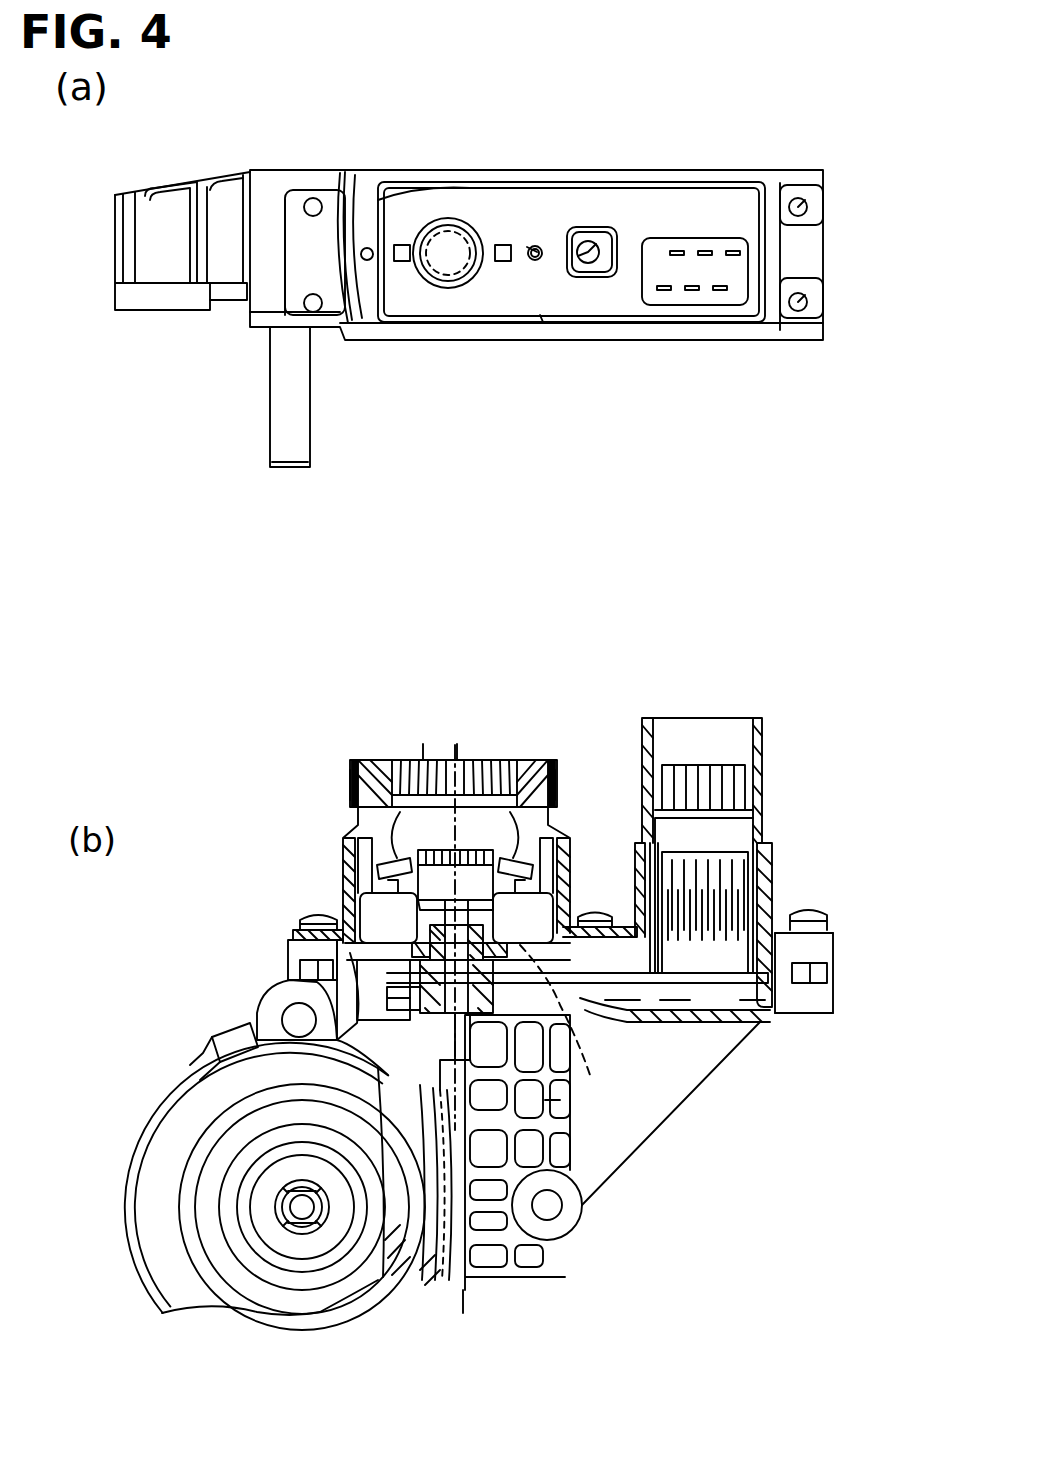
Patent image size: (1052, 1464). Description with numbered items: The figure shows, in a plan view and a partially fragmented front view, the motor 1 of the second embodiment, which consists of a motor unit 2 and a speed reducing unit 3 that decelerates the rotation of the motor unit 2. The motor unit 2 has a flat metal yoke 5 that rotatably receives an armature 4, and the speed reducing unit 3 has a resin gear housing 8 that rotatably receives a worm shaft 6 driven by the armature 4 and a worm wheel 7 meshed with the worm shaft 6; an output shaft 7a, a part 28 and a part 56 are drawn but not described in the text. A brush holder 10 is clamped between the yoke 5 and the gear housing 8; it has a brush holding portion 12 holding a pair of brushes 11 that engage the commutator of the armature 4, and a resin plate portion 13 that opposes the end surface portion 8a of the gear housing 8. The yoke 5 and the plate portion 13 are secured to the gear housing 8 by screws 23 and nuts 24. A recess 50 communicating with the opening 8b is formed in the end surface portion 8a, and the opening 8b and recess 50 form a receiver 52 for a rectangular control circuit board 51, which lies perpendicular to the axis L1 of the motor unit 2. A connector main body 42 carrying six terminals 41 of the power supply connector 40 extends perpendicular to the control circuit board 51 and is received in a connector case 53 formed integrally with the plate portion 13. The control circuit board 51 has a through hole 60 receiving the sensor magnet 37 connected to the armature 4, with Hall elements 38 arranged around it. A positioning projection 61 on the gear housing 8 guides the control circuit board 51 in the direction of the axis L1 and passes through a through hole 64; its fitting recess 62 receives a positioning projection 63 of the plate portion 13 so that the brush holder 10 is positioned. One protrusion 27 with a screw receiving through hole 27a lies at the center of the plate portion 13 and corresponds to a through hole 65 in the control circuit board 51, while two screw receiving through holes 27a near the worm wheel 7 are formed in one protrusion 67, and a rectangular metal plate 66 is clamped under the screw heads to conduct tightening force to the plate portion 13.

In FIG. 4b, the motor 1 is at (223, 848).
In FIG. 4b, the motor unit 2 is at (348, 780).
In FIG. 4a, the speed reducing unit 3 is at (160, 320).
In FIG. 4b, the speed reducing unit 3 is at (634, 1170).
In FIG. 4b, the armature 4 is at (456, 829).
In FIG. 4b, the yoke 5 is at (560, 800).
In FIG. 4b, the worm shaft 6 is at (398, 1115).
In FIG. 4b, the worm wheel 7 is at (394, 1263).
In FIG. 4a, the output shaft 7a is at (270, 436).
In FIG. 4b, the output shaft 7a is at (300, 1205).
In FIG. 4a, the gear housing 8 is at (246, 339).
In FIG. 4a, the end surface portion 8a is at (772, 323).
In FIG. 4b, the end surface portion 8a is at (330, 943).
In FIG. 4a, the opening 8b is at (455, 326).
In FIG. 4b, the opening 8b is at (323, 1053).
In FIG. 4b, the brush holder 10 is at (373, 890).
In FIG. 4b, the brushes 11 is at (455, 847).
In FIG. 4b, the brush holding portion 12 is at (548, 886).
In FIG. 4b, the plate portion 13 is at (343, 910).
In FIG. 4b, the screws 23 is at (300, 915).
In FIG. 4b, the nuts 24 is at (257, 1002).
In FIG. 4a, the protrusion 27 is at (591, 228).
In FIG. 4b, the protrusion 27 is at (627, 1008).
In FIG. 4a, the screw receiving through hole 27a is at (312, 199).
In FIG. 4b, the terminal 28 is at (828, 983).
In FIG. 4a, the sensor magnet 37 is at (500, 184).
In FIG. 4b, the sensor magnet 37 is at (388, 936).
In FIG. 4a, the Hall elements 38 is at (402, 262).
In FIG. 4b, the power supply connector 40 is at (675, 714).
In FIG. 4a, the terminals 41 is at (733, 251).
In FIG. 4b, the terminals 41 is at (738, 763).
In FIG. 4a, the connector main body 42 is at (683, 306).
In FIG. 4b, the connector main body 42 is at (743, 830).
In FIG. 4a, the recess 50 is at (737, 322).
In FIG. 4b, the recess 50 is at (768, 1000).
In FIG. 4a, the control circuit board 51 is at (550, 324).
In FIG. 4b, the control circuit board 51 is at (672, 1022).
In FIG. 4a, the receiver 52 is at (633, 320).
In FIG. 4b, the receiver 52 is at (760, 1022).
In FIG. 4b, the connector case 53 is at (765, 795).
In FIG. 4b, the seal 56 is at (565, 918).
In FIG. 4a, the through hole 60 is at (430, 223).
In FIG. 4a, the positioning projection 61 is at (534, 246).
In FIG. 4b, the positioning projection 61 is at (568, 1025).
In FIG. 4a, the fitting recess 62 is at (538, 322).
In FIG. 4a, the positioning projection 63 is at (537, 262).
In FIG. 4b, the positioning projection 63 is at (483, 956).
In FIG. 4a, the through hole 64 is at (541, 258).
In FIG. 4a, the through hole 65 is at (608, 278).
In FIG. 4b, the rectangular metal plate 66 is at (835, 936).
In FIG. 4a, the protrusion 67 is at (290, 278).
In FIG. 4b, the protrusion 67 is at (290, 972).
In FIG. 4b, the axis L1 is at (552, 1108).